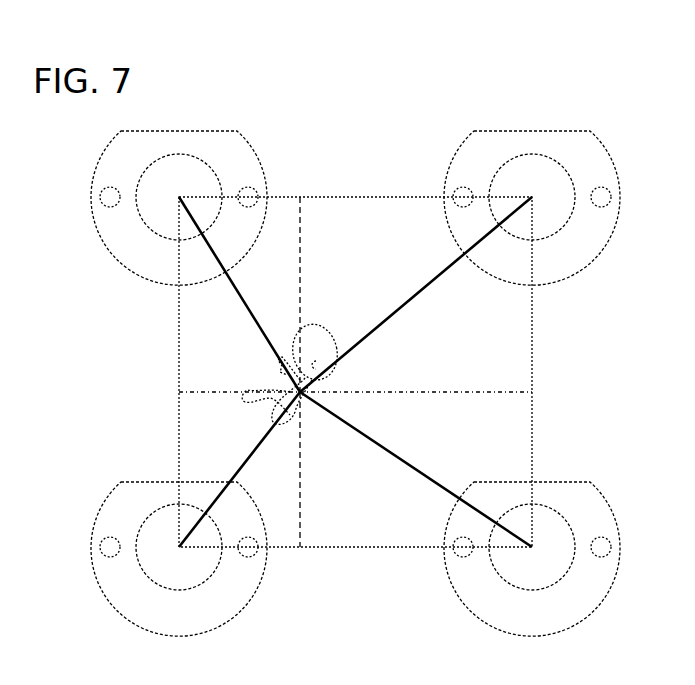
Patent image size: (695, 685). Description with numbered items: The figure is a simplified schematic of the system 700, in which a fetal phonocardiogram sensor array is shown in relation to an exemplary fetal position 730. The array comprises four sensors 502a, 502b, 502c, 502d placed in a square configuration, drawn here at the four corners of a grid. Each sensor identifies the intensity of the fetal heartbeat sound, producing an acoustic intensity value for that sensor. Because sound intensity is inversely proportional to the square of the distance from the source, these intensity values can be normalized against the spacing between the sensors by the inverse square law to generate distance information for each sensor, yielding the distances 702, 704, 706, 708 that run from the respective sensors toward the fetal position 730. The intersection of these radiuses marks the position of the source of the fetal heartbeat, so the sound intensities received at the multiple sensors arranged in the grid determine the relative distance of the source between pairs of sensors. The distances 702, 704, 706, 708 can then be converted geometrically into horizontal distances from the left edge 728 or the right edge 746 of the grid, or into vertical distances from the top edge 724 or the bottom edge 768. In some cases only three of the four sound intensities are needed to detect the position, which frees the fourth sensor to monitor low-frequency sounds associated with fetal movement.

The system 700 is at (418, 78).
The sensor 502a is at (161, 157).
The sensor 502b is at (514, 157).
The sensor 502c is at (599, 512).
The sensor 502d is at (161, 509).
The distance 702 is at (242, 298).
The distance 704 is at (412, 298).
The distance 706 is at (403, 461).
The distance 708 is at (252, 453).
The top edge 724 is at (300, 222).
The bottom edge 768 is at (300, 485).
The left edge 728 is at (202, 392).
The right edge 746 is at (407, 392).
The fetal position 730 is at (322, 330).